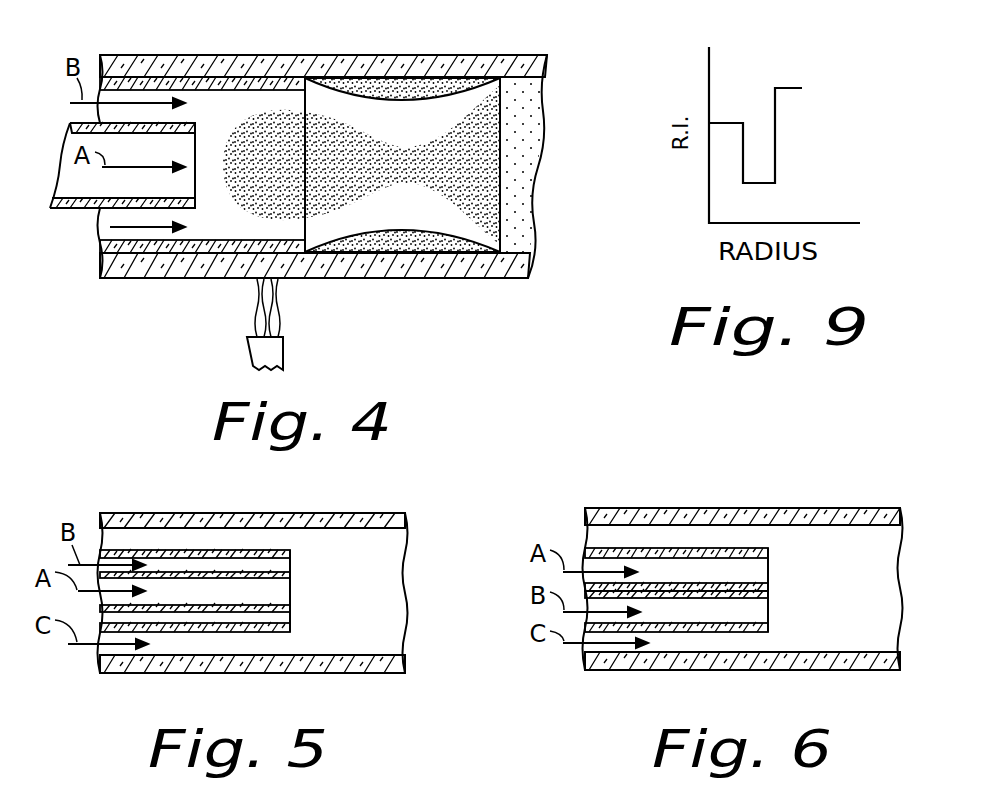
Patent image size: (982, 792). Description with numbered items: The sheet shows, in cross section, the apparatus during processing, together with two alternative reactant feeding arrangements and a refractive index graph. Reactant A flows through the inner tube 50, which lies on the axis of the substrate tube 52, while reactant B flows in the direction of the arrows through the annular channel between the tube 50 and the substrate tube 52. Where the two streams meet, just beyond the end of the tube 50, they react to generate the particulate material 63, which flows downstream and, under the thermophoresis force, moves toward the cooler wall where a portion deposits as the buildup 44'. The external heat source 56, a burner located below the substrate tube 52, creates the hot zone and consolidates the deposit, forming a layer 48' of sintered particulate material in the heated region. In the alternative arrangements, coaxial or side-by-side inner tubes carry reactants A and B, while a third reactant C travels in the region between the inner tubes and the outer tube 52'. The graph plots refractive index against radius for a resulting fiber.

In FIG. 4, the tube 50 is at (86, 123).
In FIG. 4, the substrate tube 52 is at (323, 139).
In FIG. 4, the particulate material 63 is at (250, 130).
In FIG. 4, the deposit 44' is at (402, 130).
In FIG. 4, the layer of sintered particulate material 48' is at (175, 183).
In FIG. 4, the heat source 56 is at (247, 350).
In FIG. 5, the outer tube 52' is at (269, 612).
In FIG. 6, the outer tube 52' is at (743, 564).